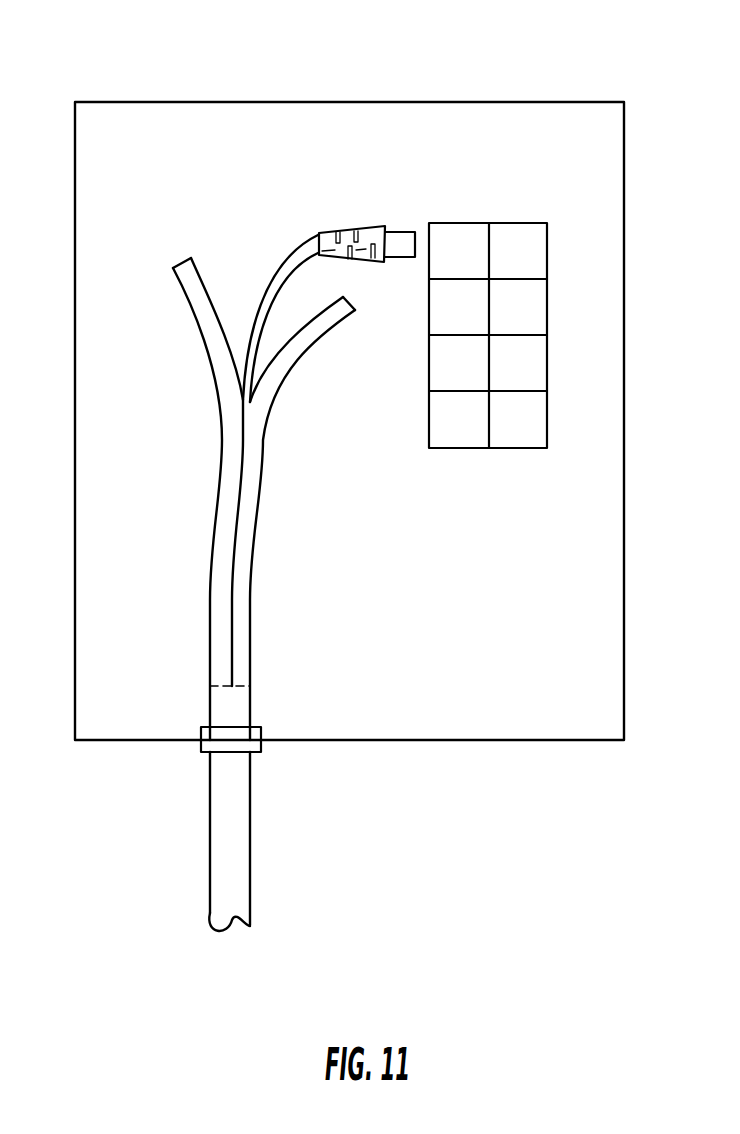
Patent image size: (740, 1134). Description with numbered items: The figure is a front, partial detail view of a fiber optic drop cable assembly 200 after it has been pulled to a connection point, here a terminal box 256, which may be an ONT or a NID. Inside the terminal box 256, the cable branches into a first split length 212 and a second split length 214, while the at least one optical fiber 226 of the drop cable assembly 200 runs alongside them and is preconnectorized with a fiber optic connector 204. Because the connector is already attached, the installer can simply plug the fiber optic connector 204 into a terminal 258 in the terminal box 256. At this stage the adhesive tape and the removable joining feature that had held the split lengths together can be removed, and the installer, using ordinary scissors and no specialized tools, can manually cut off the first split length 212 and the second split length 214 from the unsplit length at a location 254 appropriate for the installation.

The fiber optic drop cable assembly 200 is at (166, 863).
The fiber optic connector 204 is at (346, 228).
The first split length 212 is at (209, 348).
The second split length 214 is at (288, 365).
The optical fiber 226 is at (275, 261).
The location 254 is at (247, 687).
The terminal box 256 is at (152, 101).
The terminal 258 is at (520, 222).